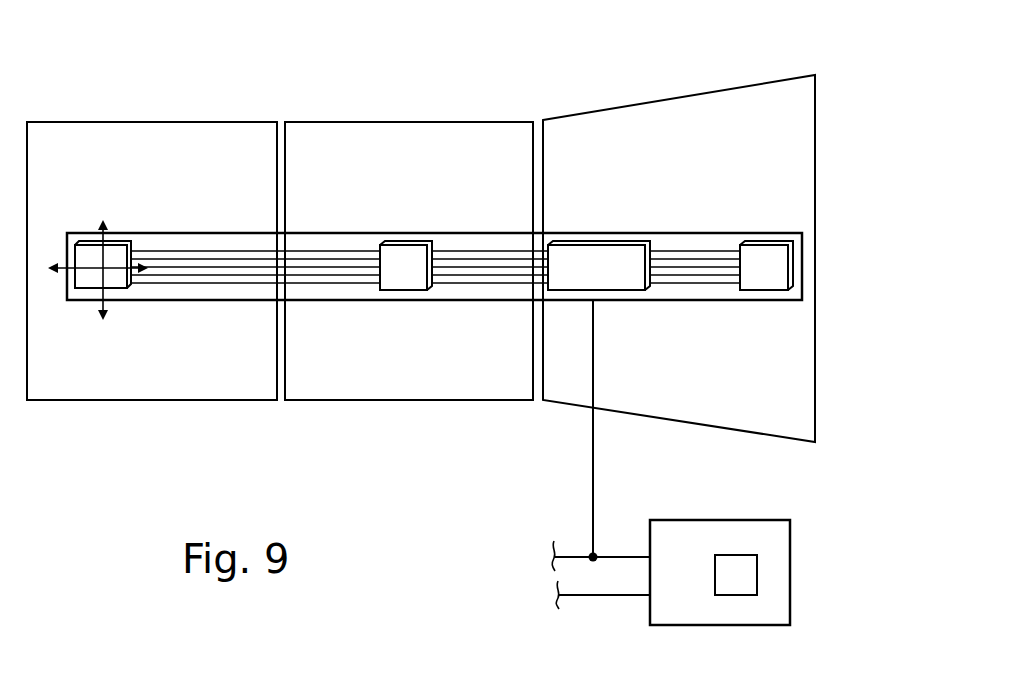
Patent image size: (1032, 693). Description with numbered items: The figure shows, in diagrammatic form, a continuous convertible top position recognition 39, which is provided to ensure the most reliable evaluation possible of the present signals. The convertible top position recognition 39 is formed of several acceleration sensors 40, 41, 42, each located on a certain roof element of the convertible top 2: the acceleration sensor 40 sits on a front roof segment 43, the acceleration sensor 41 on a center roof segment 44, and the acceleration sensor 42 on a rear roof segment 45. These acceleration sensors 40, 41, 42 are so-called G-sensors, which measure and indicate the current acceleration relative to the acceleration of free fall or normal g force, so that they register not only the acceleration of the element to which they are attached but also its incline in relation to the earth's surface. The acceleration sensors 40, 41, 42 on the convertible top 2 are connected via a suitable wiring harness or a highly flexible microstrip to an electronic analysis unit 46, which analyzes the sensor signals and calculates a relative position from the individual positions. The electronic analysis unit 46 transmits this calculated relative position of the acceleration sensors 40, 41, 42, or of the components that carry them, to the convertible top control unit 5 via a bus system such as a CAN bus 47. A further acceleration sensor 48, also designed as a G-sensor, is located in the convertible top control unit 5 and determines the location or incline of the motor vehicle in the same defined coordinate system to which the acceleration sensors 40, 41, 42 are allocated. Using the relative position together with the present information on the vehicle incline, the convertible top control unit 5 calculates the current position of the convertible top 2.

The convertible top 2 is at (415, 373).
The convertible top control unit 5 is at (790, 557).
The convertible top position recognition 39 is at (802, 233).
The acceleration sensor 40 is at (87, 257).
The acceleration sensor 41 is at (400, 258).
The acceleration sensor 42 is at (763, 258).
The front roof segment 43 is at (131, 122).
The center roof segment 44 is at (382, 122).
The rear roof segment 45 is at (688, 97).
The electronic analysis unit 46 is at (605, 258).
The CAN bus 47 is at (593, 472).
The further acceleration sensor 48 is at (737, 555).